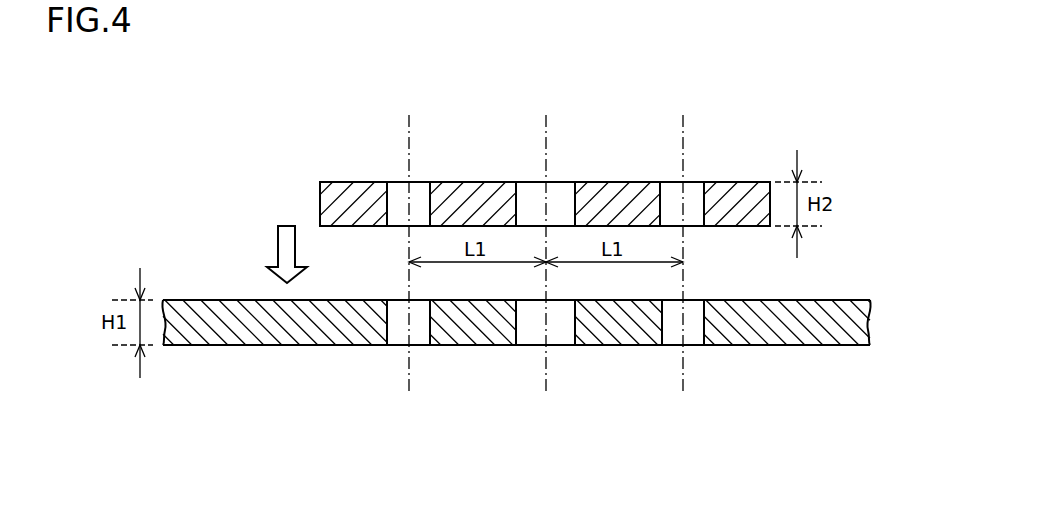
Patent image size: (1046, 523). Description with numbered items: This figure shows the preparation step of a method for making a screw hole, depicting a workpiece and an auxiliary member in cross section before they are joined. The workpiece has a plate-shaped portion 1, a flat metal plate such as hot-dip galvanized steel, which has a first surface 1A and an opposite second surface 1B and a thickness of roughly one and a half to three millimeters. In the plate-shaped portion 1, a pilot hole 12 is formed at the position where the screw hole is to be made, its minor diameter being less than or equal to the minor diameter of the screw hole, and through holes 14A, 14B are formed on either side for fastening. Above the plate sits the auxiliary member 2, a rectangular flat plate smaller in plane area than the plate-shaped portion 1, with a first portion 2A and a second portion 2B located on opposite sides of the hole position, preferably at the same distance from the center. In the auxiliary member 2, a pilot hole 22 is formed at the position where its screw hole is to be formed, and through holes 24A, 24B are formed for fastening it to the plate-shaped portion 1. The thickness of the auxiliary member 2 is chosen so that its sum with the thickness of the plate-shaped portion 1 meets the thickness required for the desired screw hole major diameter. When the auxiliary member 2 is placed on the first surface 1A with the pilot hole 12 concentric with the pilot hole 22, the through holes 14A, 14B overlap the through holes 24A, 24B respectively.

The plate-shaped portion 1 is at (516, 368).
The first surface 1A is at (208, 300).
The second surface 1B is at (213, 345).
The auxiliary member 2 is at (501, 135).
The first portion 2A is at (383, 204).
The second portion 2B is at (707, 205).
The pilot hole 12 is at (565, 333).
The through hole 14A is at (422, 333).
The through hole 14B is at (697, 333).
The pilot hole 22 is at (563, 192).
The through hole 24A is at (418, 192).
The through hole 24B is at (670, 192).